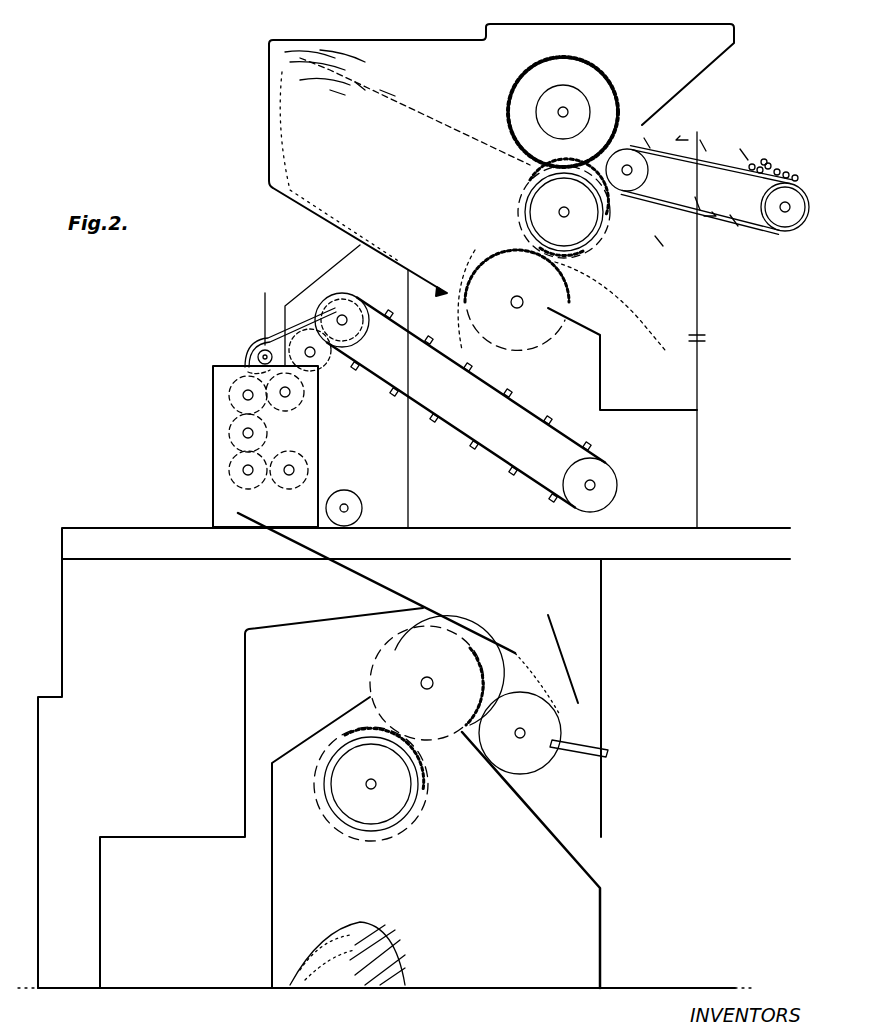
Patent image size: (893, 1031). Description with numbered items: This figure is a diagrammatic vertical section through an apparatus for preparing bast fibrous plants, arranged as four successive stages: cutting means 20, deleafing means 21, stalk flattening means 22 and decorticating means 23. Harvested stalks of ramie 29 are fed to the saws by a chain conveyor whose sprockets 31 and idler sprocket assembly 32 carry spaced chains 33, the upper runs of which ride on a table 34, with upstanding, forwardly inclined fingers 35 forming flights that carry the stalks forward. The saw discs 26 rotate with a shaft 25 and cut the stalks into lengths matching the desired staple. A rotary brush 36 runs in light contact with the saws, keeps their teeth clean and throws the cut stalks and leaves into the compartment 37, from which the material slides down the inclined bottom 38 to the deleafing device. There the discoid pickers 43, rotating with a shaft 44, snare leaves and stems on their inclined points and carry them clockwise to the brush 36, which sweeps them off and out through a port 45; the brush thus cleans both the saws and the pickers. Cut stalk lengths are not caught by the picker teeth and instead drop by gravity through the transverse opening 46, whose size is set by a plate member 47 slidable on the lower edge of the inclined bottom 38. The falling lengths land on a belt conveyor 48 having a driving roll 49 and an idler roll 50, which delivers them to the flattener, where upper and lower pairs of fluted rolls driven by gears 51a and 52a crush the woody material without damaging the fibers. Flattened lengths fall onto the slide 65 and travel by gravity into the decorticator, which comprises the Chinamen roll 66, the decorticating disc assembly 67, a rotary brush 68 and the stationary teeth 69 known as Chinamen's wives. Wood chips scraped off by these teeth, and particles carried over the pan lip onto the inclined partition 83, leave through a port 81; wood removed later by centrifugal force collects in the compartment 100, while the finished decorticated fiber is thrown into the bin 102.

The cutting means 20 is at (604, 68).
The deleafing means 21 is at (568, 290).
The stalk flattening means 22 is at (212, 397).
The decorticating means 23 is at (372, 672).
The shaft 25 is at (558, 116).
The saw discs 26 is at (511, 100).
The stalks of ramie 29 is at (790, 162).
The sprockets 31 is at (646, 178).
The idler sprocket assembly 32 is at (777, 232).
The chains 33 is at (570, 212).
The table 34 is at (737, 176).
The fingers 35 is at (728, 160).
The rotary brush 36 is at (606, 236).
The compartment 37 is at (443, 38).
The inclined bottom 38 is at (310, 212).
The discoid pickers 43 is at (548, 340).
The shaft 44 is at (517, 308).
The port 45 is at (700, 348).
The transverse opening 46 is at (447, 296).
The plate member 47 is at (440, 293).
The belt conveyor 48 is at (504, 466).
The driving roll 49 is at (362, 336).
The idler roll 50 is at (618, 485).
The gears 51a is at (270, 414).
The gears 52a is at (278, 488).
The slide 65 is at (331, 562).
The Chinamen roll 66 is at (540, 764).
The decorticating disc assembly 67 is at (386, 655).
The rotary brush 68 is at (350, 832).
The stationary teeth 69 is at (578, 742).
The port 81 is at (603, 836).
The inclined partition 83 is at (534, 820).
The compartment 100 is at (256, 840).
The bin 102 is at (542, 988).